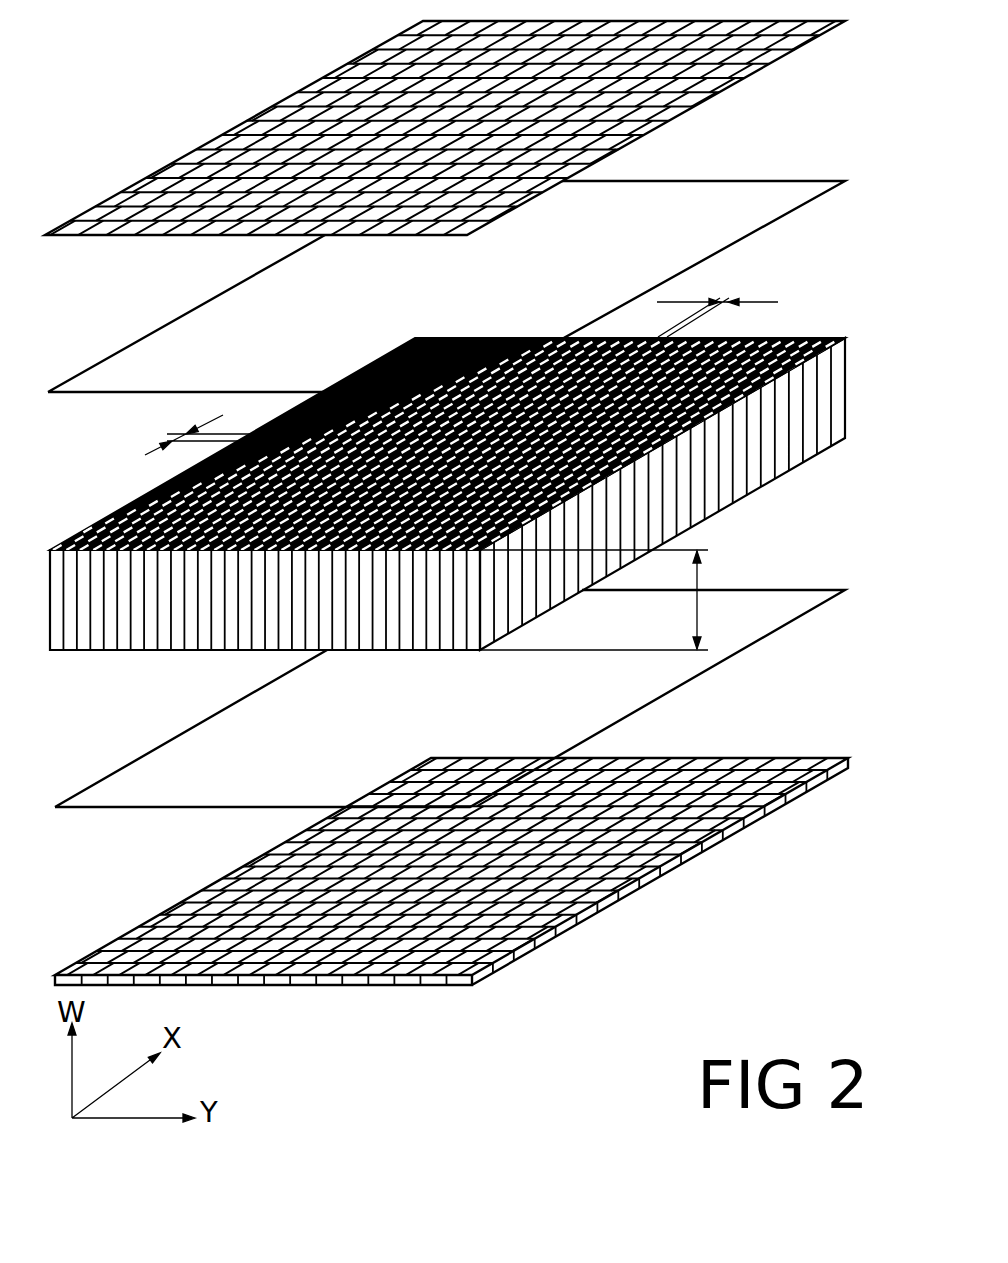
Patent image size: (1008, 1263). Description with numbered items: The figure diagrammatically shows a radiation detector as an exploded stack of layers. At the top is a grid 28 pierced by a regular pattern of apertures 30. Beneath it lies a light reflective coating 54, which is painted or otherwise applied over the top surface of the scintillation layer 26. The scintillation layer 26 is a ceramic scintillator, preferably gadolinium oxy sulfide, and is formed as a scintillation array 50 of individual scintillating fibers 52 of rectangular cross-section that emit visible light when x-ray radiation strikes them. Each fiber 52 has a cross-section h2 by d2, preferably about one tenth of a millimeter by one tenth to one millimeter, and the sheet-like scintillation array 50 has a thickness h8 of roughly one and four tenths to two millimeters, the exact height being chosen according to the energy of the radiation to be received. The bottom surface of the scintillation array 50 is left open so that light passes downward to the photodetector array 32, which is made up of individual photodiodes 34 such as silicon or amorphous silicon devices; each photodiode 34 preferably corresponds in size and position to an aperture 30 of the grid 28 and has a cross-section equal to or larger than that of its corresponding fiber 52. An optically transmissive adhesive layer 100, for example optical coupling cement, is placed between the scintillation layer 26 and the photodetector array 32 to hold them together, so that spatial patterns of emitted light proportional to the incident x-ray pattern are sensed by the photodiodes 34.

The scintillation layer 26 is at (815, 303).
The grid 28 is at (246, 69).
The apertures 30 is at (205, 155).
The photodetector array 32 is at (740, 821).
The photodiodes 34 is at (208, 891).
The scintillation array 50 is at (765, 488).
The scintillating fibers 52 is at (150, 497).
The light reflective coating 54 is at (163, 328).
The optically transmissive adhesive layer 100 is at (158, 748).
The fiber cross-section width d2 is at (717, 304).
The fiber cross-section height h2 is at (187, 435).
The scintillation sheet thickness h8 is at (612, 600).